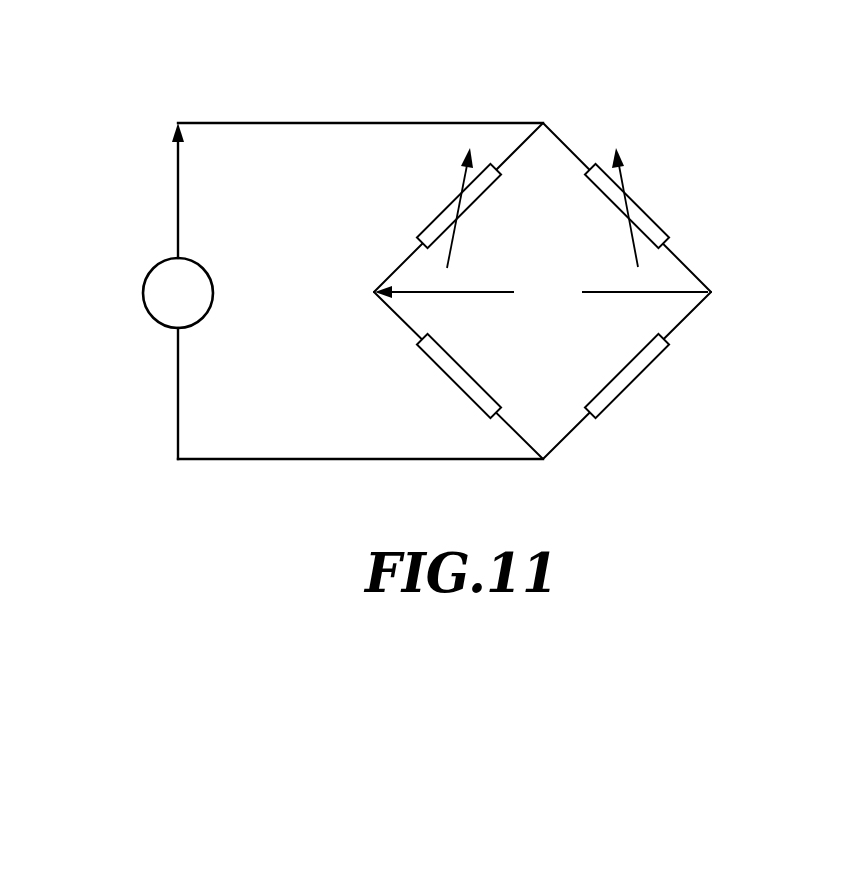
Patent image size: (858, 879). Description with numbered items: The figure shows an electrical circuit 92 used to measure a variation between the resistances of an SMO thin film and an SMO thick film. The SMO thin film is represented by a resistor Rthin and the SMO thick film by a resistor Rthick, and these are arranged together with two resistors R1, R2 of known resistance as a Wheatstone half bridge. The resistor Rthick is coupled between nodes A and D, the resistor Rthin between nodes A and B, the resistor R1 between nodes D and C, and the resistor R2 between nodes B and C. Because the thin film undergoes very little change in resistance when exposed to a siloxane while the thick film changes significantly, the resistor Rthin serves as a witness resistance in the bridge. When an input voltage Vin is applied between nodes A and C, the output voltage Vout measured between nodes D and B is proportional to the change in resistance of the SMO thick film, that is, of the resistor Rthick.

The electrical circuit 92 is at (473, 276).
The input voltage Vin is at (178, 293).
The output voltage Vout is at (541, 295).
The resistor Rthick is at (438, 208).
The resistor Rthin is at (641, 207).
The resistor R1 is at (458, 376).
The resistor R2 is at (628, 376).